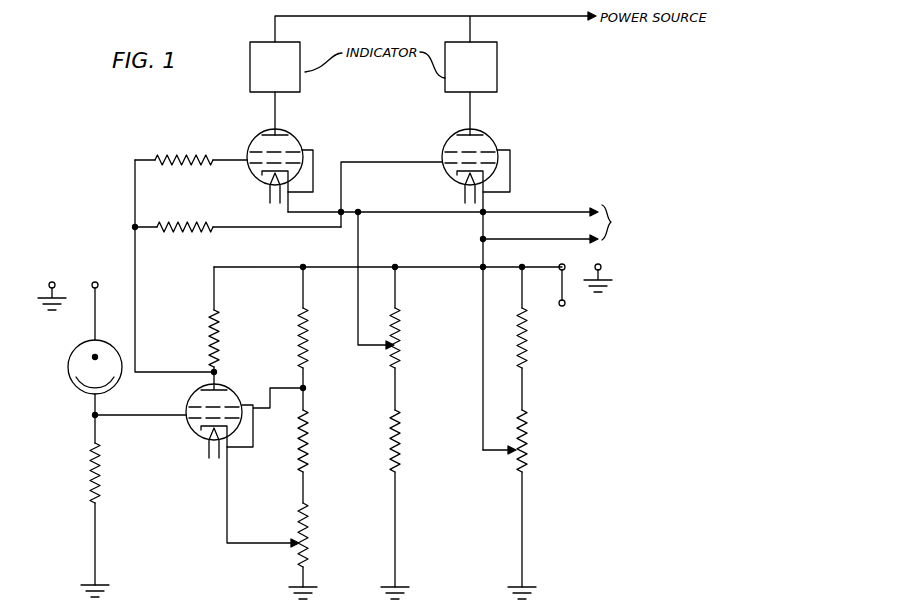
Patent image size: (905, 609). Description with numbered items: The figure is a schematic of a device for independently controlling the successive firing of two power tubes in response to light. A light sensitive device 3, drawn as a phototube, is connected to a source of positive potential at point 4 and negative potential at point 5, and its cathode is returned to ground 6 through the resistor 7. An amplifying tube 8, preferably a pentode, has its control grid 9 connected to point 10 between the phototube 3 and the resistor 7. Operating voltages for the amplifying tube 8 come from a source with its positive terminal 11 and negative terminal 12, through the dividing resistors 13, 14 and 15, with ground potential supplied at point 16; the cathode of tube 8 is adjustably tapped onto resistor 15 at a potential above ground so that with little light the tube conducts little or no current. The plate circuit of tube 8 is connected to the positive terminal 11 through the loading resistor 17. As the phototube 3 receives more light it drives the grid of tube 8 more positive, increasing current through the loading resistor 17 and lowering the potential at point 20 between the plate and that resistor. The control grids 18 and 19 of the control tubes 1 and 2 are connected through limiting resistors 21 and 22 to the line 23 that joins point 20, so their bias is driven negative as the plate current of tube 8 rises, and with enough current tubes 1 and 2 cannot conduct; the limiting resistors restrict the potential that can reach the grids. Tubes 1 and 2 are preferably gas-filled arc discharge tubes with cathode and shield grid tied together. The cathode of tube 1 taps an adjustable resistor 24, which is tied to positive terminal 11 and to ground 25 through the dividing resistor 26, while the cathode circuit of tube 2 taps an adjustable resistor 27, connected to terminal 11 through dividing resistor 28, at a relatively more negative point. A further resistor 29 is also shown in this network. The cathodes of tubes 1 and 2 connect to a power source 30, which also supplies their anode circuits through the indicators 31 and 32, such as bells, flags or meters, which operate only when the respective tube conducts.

The control tube 1 is at (269, 162).
The power tube 2 is at (470, 281).
The light sensitive device 3 is at (76, 387).
The point of positive potential 4 is at (105, 283).
The point of negative potential 5 is at (58, 281).
The ground 6 is at (105, 586).
The resistor 7 is at (107, 484).
The amplifying tube 8 is at (199, 432).
The control grid 9 is at (230, 457).
The point 10 is at (93, 415).
The positive terminal 11 is at (558, 265).
The negative terminal 12 is at (608, 281).
The dividing resistor 13 is at (307, 336).
The dividing resistor 14 is at (311, 446).
The dividing resistor 15 is at (311, 549).
The point of ground potential 16 is at (311, 587).
The loading resistor 17 is at (222, 336).
The control grid 18 is at (250, 164).
The control grid 19 is at (441, 161).
The point 20 is at (220, 372).
The limiting resistor 21 is at (179, 156).
The limiting resistor 22 is at (196, 222).
The line 23 is at (140, 331).
The adjustable resistor 24 is at (401, 343).
The ground 25 is at (403, 587).
The dividing resistor 26 is at (403, 446).
The adjustable resistor 27 is at (530, 446).
The dividing resistor 28 is at (530, 587).
The resistor 29 is at (528, 331).
The power source 30 is at (610, 220).
The indicator 31 is at (275, 88).
The indicator 32 is at (471, 88).